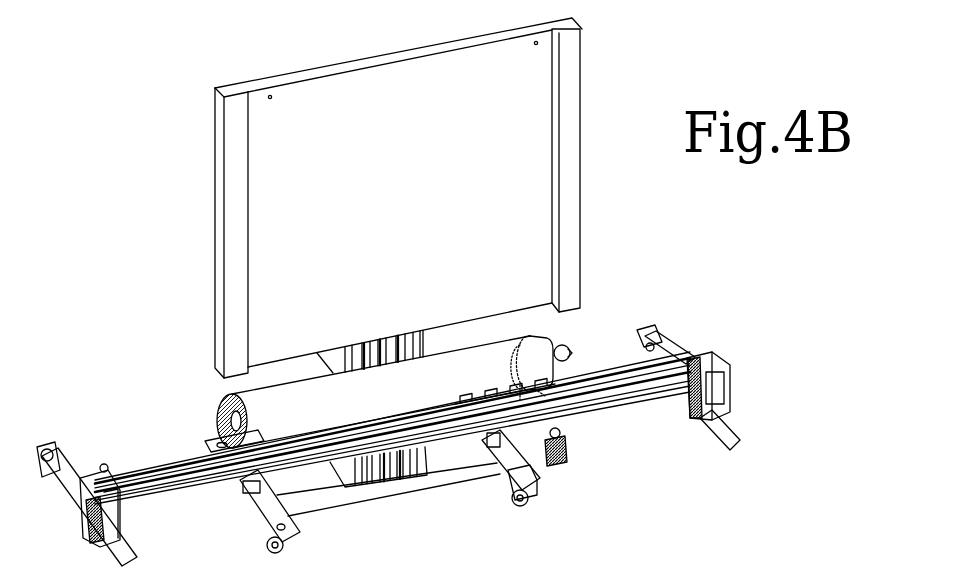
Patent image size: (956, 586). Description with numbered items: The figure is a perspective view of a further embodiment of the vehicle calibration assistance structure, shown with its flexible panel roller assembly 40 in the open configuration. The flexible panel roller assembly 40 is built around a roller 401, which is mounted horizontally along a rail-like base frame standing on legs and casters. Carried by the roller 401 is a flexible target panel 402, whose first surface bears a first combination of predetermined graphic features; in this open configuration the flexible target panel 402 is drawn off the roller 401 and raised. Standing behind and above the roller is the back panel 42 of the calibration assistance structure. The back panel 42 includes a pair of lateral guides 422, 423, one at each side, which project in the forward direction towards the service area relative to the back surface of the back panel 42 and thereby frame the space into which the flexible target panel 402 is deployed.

The flexible panel roller assembly 40 is at (388, 401).
The roller 401 is at (217, 427).
The flexible target panel 402 is at (453, 383).
The back panel 42 is at (414, 198).
The lateral guide 422 is at (237, 322).
The lateral guide 423 is at (563, 276).